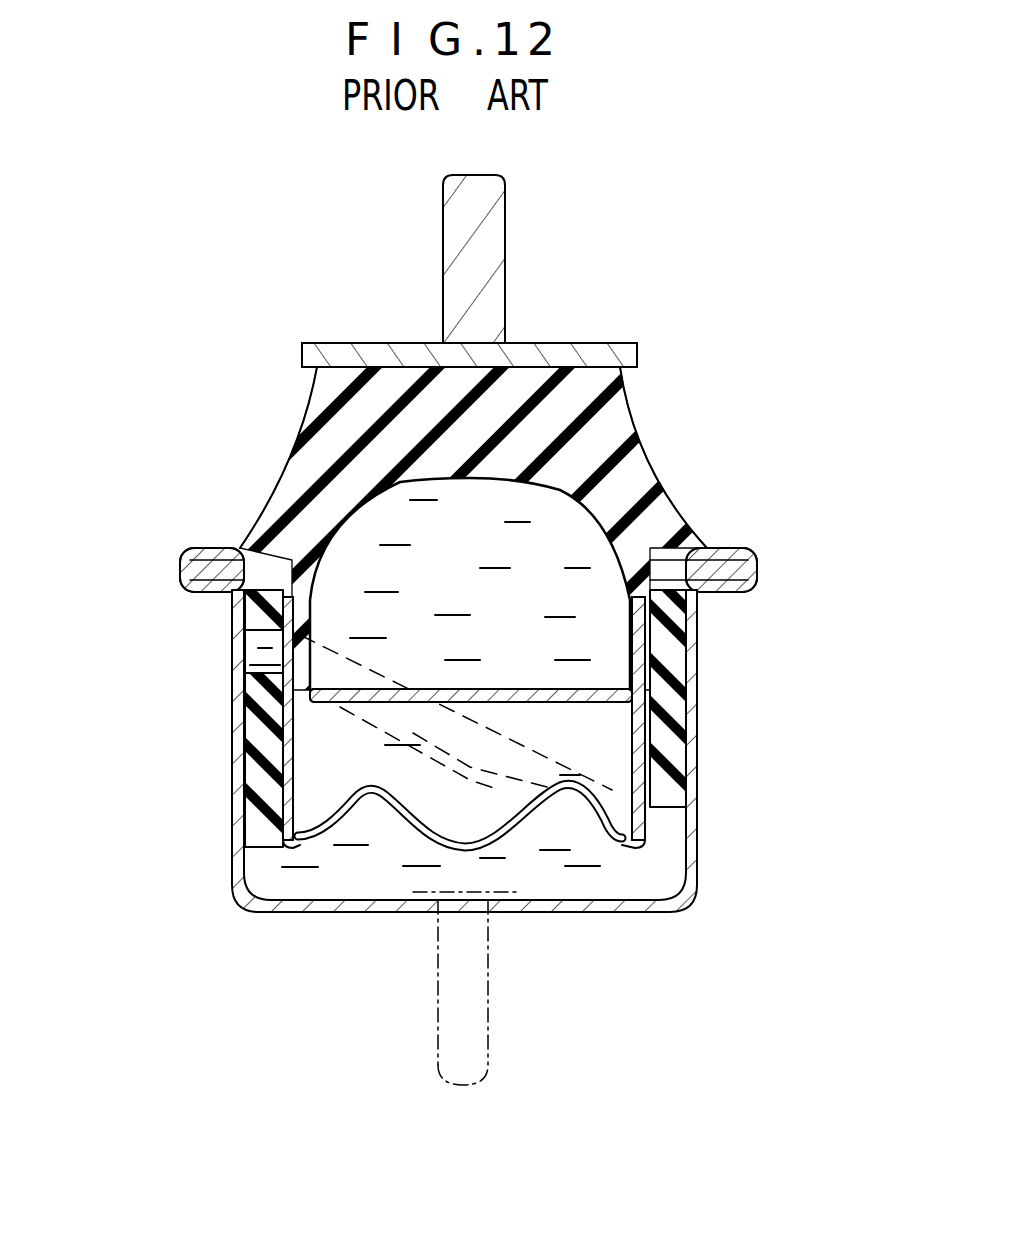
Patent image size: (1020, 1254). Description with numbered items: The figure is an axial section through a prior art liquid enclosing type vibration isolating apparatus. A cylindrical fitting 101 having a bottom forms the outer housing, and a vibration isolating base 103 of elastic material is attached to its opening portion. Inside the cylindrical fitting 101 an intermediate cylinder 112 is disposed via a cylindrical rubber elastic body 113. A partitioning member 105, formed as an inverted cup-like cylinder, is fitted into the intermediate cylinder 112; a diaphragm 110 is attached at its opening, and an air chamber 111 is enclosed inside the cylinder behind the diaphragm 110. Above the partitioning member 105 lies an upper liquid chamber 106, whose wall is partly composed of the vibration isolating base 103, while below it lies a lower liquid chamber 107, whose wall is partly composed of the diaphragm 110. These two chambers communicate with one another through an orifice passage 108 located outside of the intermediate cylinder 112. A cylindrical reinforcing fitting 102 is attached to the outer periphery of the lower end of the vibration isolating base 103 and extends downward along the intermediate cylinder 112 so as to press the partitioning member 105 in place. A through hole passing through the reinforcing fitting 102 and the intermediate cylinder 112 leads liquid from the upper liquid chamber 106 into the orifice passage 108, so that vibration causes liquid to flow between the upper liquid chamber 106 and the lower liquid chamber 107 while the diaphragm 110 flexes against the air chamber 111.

The cylindrical fitting 101 is at (698, 885).
The cylindrical reinforcing fitting 102 is at (255, 537).
The vibration isolating base 103 is at (620, 405).
The partitioning member 105 is at (357, 762).
The upper liquid chamber 106 is at (582, 540).
The lower liquid chamber 107 is at (340, 880).
The orifice passage 108 is at (255, 655).
The diaphragm 110 is at (508, 842).
The air chamber 111 is at (297, 795).
The intermediate cylinder 112 is at (707, 557).
The cylindrical rubber elastic body 113 is at (260, 610).